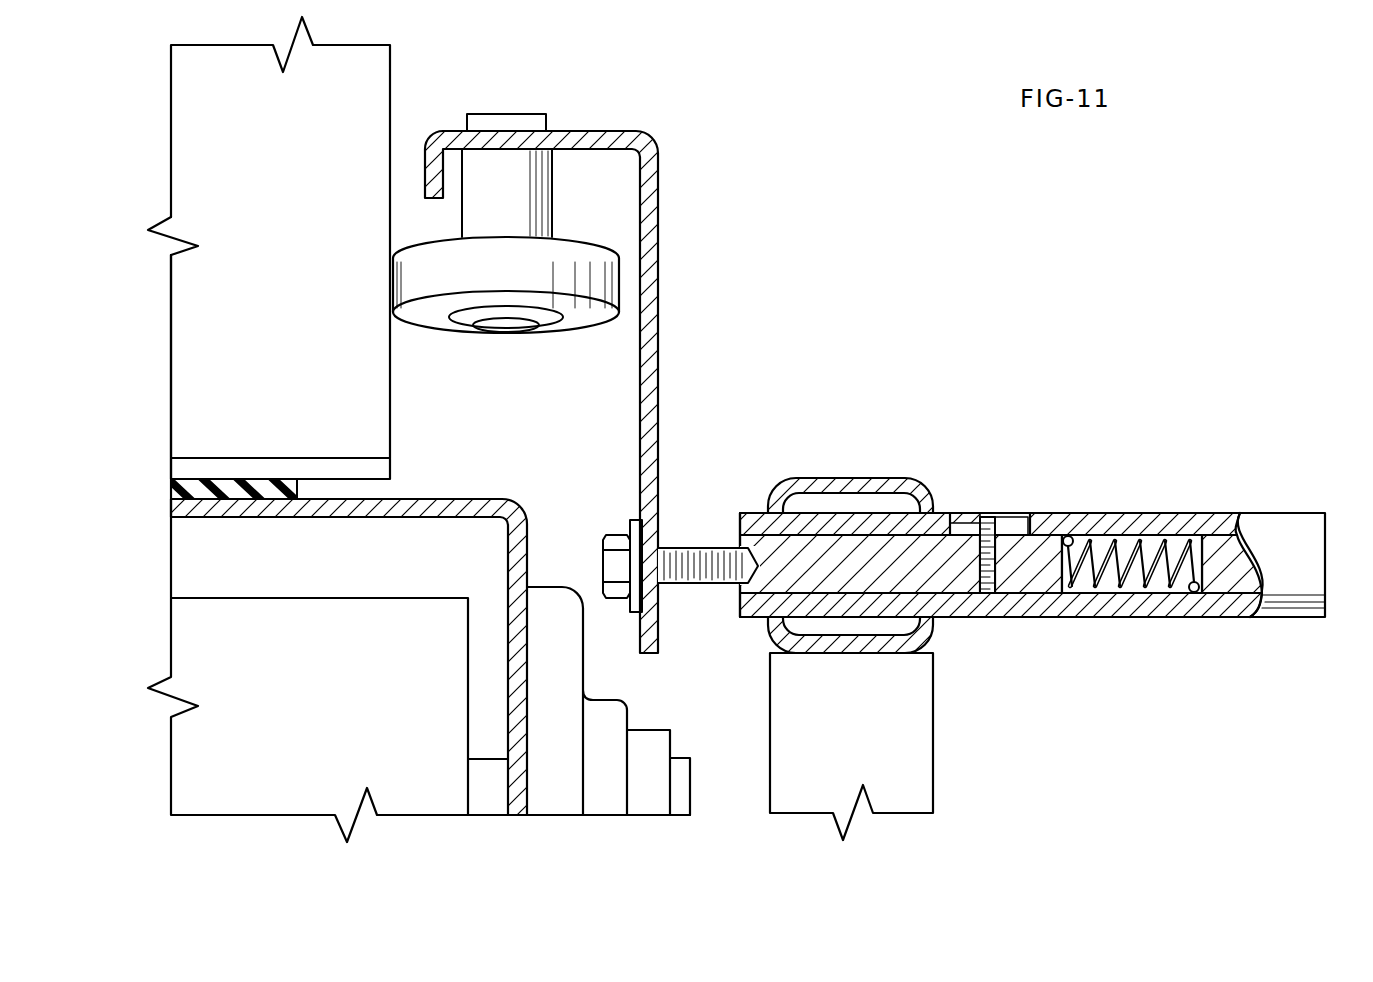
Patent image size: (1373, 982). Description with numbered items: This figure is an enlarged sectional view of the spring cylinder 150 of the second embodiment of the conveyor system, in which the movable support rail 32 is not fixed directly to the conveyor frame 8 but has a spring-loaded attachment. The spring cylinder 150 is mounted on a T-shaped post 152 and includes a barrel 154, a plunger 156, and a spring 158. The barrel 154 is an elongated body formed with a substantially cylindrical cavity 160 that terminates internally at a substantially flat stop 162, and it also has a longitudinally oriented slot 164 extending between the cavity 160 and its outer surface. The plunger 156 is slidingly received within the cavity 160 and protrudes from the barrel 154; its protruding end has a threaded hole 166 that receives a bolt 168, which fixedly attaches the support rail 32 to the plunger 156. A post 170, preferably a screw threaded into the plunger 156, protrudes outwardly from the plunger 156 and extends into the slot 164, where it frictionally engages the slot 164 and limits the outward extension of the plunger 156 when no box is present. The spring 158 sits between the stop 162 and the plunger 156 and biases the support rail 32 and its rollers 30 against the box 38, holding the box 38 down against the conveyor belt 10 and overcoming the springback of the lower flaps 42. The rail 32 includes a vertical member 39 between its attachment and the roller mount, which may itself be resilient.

The conveyor frame 8 is at (434, 500).
The conveyor belt 10 is at (228, 487).
The rollers 30 is at (413, 277).
The movable support rail 32 is at (660, 174).
The box 38 is at (202, 113).
The vertical member 39 is at (660, 233).
The lower flaps 42 is at (328, 468).
The spring cylinder 150 is at (1056, 527).
The T-shaped post 152 is at (920, 755).
The barrel 154 is at (1100, 524).
The plunger 156 is at (871, 548).
The spring 158 is at (1097, 590).
The cylindrical cavity 160 is at (1167, 590).
The stop 162 is at (1190, 552).
The slot 164 is at (1015, 520).
The threaded hole 166 is at (713, 556).
The bolt 168 is at (608, 565).
The post 170 is at (986, 520).